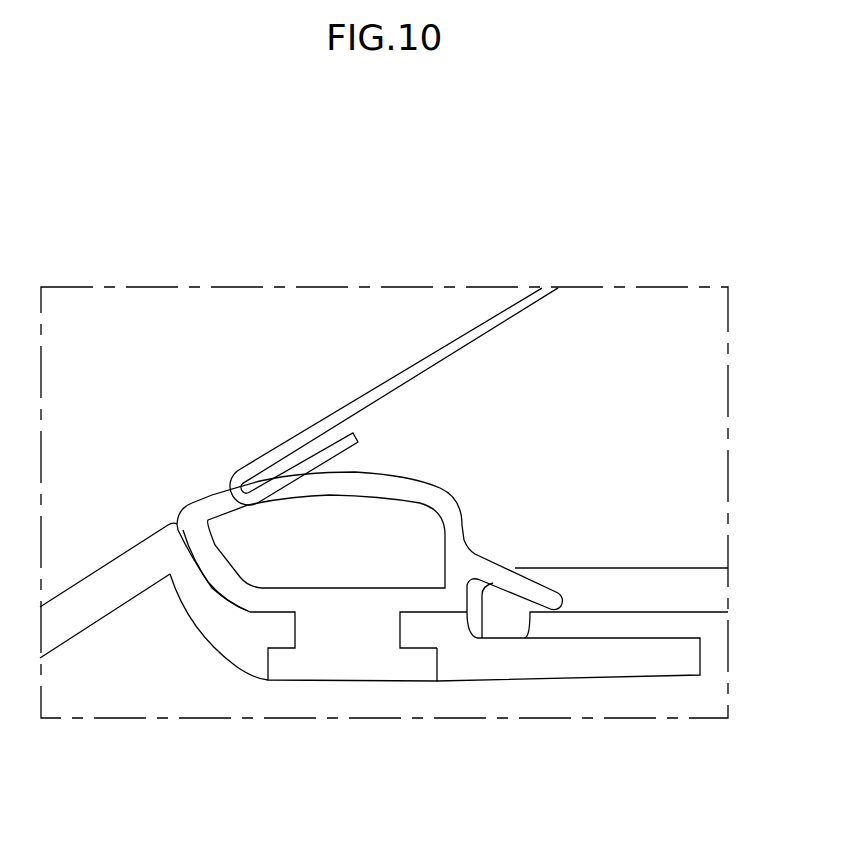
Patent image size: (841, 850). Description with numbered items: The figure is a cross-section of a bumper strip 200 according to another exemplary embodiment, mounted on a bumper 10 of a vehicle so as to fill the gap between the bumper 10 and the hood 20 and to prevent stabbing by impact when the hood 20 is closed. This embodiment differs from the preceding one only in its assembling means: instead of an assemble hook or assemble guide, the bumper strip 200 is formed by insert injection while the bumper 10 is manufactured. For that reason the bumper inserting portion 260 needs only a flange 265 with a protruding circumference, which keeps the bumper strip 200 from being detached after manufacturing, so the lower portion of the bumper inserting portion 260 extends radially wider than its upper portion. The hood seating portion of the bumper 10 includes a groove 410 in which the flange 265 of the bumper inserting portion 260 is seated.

The bumper 10 is at (118, 543).
The hood 20 is at (455, 345).
The bumper strip 200 is at (452, 478).
The bumper inserting portion 260 is at (353, 679).
The flange 265 is at (421, 647).
The groove 410 is at (435, 663).